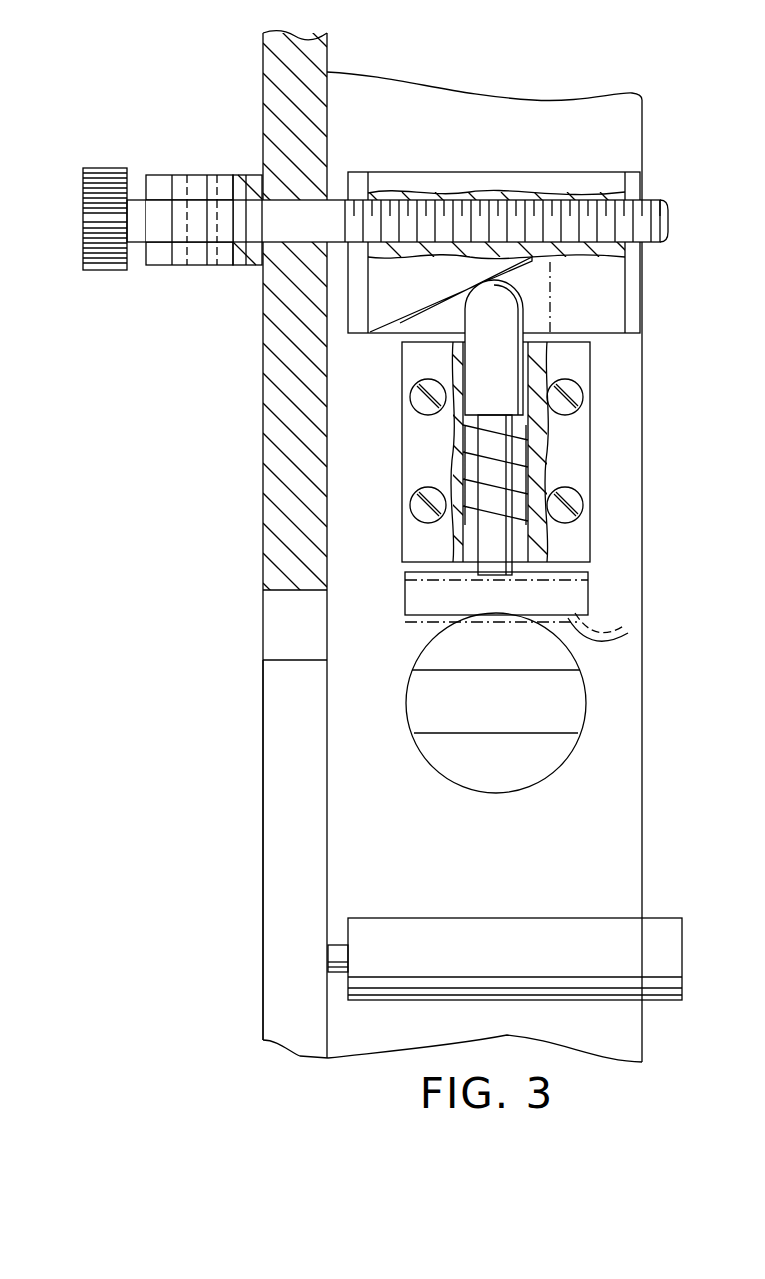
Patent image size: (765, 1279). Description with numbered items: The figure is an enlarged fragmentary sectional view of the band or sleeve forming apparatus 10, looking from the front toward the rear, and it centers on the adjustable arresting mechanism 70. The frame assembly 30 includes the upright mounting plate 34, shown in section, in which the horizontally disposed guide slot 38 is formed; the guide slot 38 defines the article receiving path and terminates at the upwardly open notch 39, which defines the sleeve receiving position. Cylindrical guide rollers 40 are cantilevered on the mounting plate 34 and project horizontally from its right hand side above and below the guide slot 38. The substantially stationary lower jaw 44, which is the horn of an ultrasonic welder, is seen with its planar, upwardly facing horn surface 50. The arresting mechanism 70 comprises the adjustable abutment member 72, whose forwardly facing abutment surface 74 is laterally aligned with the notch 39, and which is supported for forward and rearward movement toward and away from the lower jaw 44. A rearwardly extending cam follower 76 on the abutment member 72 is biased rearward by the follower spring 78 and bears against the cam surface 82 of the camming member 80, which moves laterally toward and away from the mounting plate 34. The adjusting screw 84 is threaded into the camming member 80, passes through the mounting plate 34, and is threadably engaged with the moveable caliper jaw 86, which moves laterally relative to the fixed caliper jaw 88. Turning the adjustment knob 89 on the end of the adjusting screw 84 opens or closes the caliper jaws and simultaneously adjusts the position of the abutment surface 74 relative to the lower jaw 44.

The band or sleeve forming apparatus 10 is at (500, 60).
The frame assembly 30 is at (244, 461).
The mounting plate 34 is at (262, 540).
The guide slot 38 is at (263, 760).
The notch 39 is at (280, 623).
The guide rollers 40 is at (453, 940).
The lower jaw 44 is at (543, 735).
The horn surface 50 is at (553, 703).
The arresting mechanism 70 is at (600, 601).
The abutment member 72 is at (402, 597).
The abutment surface 74 is at (642, 632).
The cam follower 76 is at (477, 363).
The follower spring 78 is at (493, 442).
The camming member 80 is at (368, 287).
The cam surface 82 is at (437, 312).
The adjusting screw 84 is at (457, 210).
The moveable caliper jaw 86 is at (197, 182).
The fixed caliper jaw 88 is at (240, 182).
The adjustment knob 89 is at (83, 232).